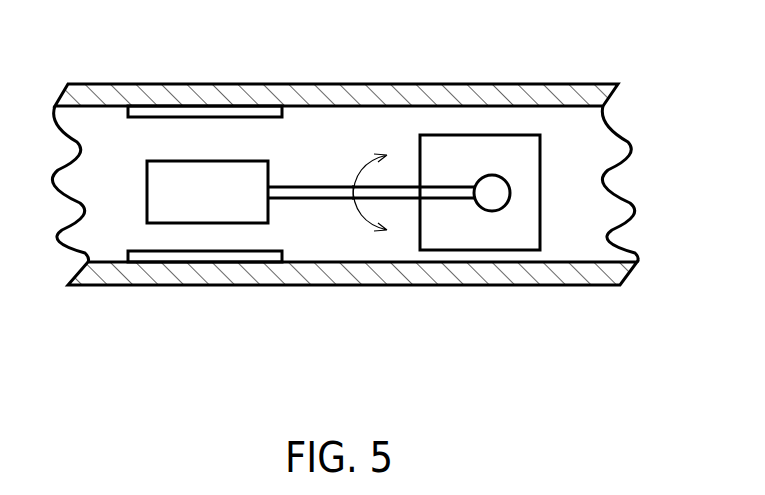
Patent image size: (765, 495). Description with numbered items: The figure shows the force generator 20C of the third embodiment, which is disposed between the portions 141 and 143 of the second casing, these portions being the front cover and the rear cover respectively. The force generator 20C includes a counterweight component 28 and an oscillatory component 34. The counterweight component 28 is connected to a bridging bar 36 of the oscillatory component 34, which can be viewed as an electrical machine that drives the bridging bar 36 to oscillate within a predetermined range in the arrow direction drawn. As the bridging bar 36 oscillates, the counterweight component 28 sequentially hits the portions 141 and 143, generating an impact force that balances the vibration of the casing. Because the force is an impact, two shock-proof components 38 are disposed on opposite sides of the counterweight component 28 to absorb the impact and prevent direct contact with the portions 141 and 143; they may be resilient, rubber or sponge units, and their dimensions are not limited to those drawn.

The portion of the second casing 141 is at (562, 95).
The portion of the second casing 143 is at (566, 275).
The shock-proof component 38 is at (200, 113).
The counterweight component 28 is at (240, 200).
The bridging bar 36 is at (313, 195).
The oscillatory component 34 is at (480, 236).
The force generator 20C is at (343, 256).